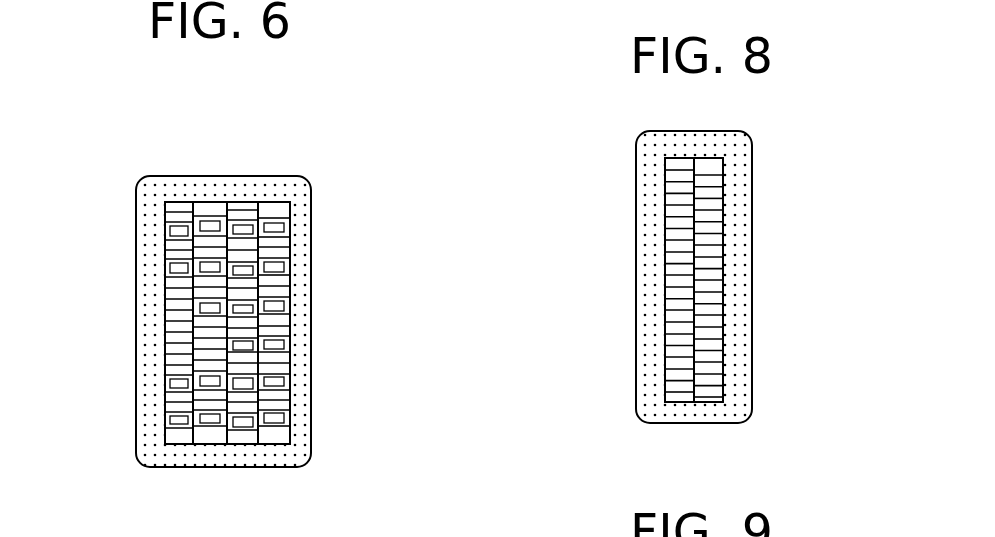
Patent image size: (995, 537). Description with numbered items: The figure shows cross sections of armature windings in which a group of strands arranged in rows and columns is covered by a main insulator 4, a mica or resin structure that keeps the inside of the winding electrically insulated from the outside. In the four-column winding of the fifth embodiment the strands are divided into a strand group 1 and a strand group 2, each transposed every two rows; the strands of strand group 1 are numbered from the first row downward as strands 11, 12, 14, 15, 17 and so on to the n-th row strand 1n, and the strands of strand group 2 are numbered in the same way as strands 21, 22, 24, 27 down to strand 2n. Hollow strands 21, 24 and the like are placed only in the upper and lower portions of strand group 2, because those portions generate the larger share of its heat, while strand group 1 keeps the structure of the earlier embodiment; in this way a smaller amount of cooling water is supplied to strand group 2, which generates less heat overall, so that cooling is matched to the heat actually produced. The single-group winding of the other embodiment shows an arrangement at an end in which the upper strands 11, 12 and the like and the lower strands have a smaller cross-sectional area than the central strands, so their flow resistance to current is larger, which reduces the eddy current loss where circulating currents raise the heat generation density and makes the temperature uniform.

In FIG. 6, the strand group 1 is at (278, 210).
In FIG. 6, the strand group 2 is at (205, 208).
In FIG. 6, the main insulator 4 is at (302, 368).
In FIG. 8, the main insulator 4 is at (752, 280).
In FIG. 6, the strand 11 is at (283, 232).
In FIG. 8, the strand 11 is at (713, 180).
In FIG. 6, the strand 12 is at (283, 240).
In FIG. 8, the strand 12 is at (713, 190).
In FIG. 6, the strand 14 is at (285, 268).
In FIG. 6, the strand 15 is at (285, 277).
In FIG. 6, the strand 17 is at (287, 300).
In FIG. 6, the hollow strand 21 is at (202, 218).
In FIG. 6, the strand 22 is at (165, 243).
In FIG. 6, the hollow strand 24 is at (205, 240).
In FIG. 6, the strand 27 is at (200, 297).
In FIG. 6, the strand 1n is at (282, 438).
In FIG. 8, the strand 1n is at (720, 397).
In FIG. 6, the strand 2n is at (203, 440).